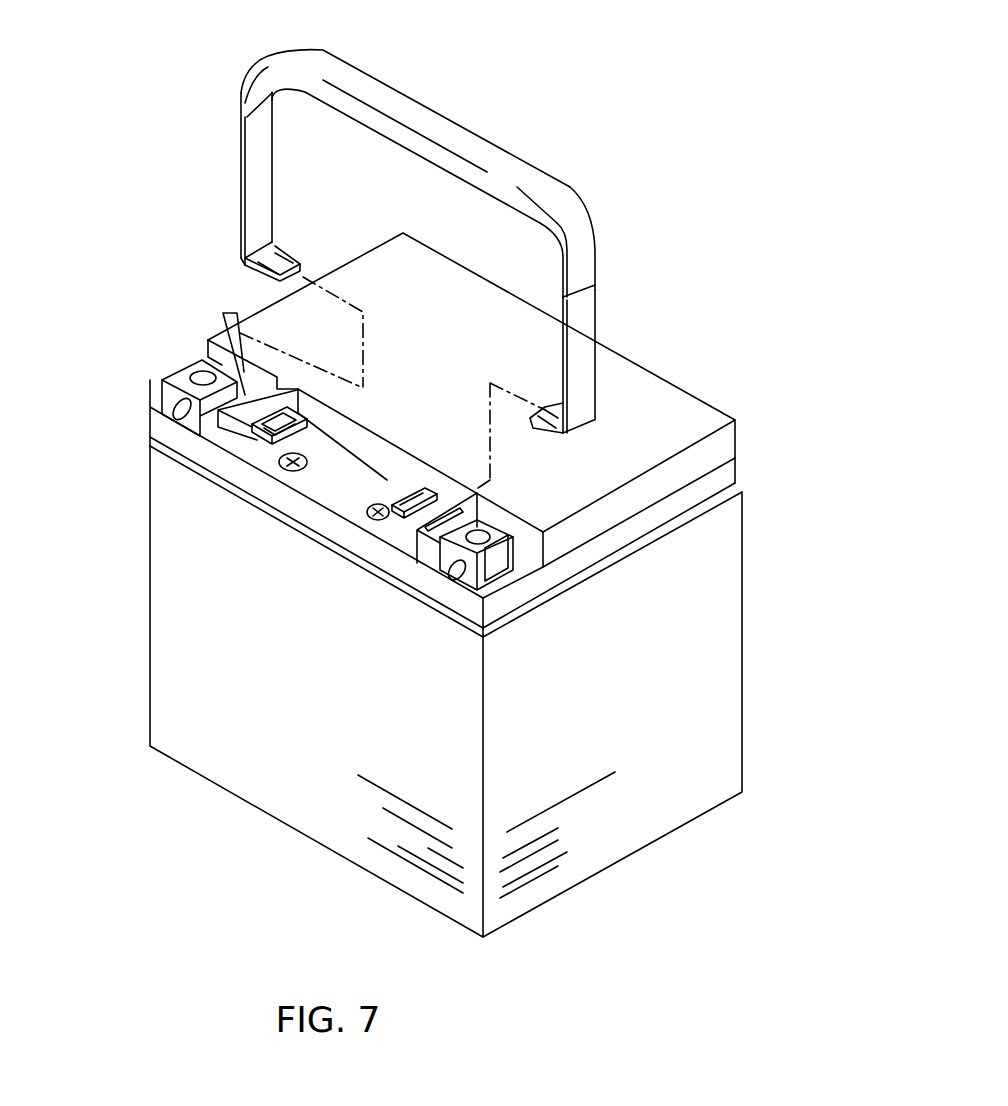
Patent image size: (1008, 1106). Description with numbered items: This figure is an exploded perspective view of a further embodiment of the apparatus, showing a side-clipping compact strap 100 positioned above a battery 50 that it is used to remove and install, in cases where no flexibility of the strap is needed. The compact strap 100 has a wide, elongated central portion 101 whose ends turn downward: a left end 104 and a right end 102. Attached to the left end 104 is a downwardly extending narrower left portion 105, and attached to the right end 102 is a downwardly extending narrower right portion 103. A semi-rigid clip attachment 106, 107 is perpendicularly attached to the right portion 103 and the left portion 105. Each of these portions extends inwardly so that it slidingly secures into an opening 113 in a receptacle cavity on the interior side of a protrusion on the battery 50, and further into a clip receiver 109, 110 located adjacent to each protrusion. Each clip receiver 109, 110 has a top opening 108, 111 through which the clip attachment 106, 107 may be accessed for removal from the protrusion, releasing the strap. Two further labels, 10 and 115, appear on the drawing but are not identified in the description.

The battery pack 10 is at (662, 97).
The battery 50 is at (706, 647).
The side-clipping compact strap 100 is at (600, 190).
The central portion 101 is at (485, 135).
The right end 102 is at (587, 275).
The right portion 103 is at (583, 322).
The left end 104 is at (243, 107).
The left portion 105 is at (243, 159).
The clip attachment 106 is at (568, 405).
The clip attachment 107 is at (267, 275).
The top opening 108 is at (262, 428).
The clip receiver 109 is at (255, 432).
The clip receiver 110 is at (367, 511).
The top opening 111 is at (405, 500).
The opening 113 is at (467, 550).
The top plate 115 is at (303, 490).